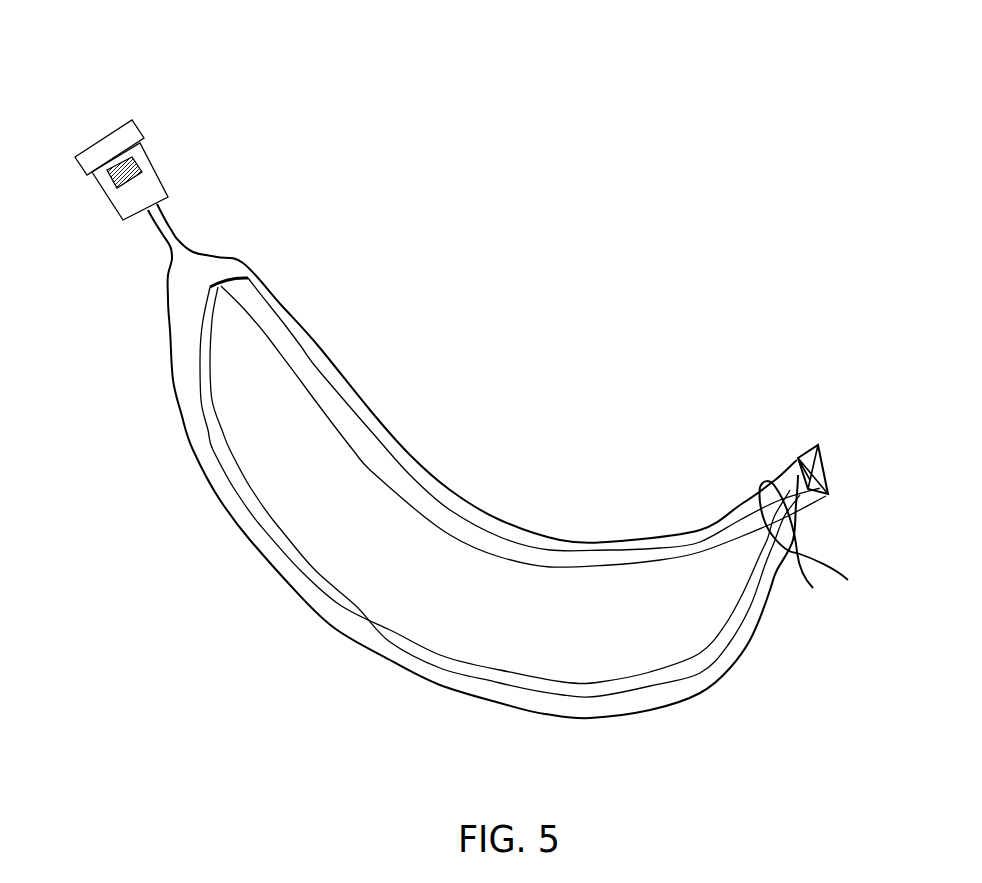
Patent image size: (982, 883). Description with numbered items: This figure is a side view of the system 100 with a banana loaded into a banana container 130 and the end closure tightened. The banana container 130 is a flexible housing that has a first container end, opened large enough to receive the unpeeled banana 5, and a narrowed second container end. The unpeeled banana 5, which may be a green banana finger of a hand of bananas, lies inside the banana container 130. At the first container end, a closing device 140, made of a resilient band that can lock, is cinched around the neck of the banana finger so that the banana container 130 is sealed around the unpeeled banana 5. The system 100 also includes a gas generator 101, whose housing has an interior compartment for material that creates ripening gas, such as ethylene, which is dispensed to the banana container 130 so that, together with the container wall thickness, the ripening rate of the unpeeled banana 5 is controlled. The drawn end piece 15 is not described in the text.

The system 100 is at (461, 363).
The gas generator 101 is at (188, 156).
The unpeeled banana 5 is at (335, 410).
The banana container 130 is at (448, 488).
The end tip 15 is at (798, 458).
The closing device 140 is at (803, 590).